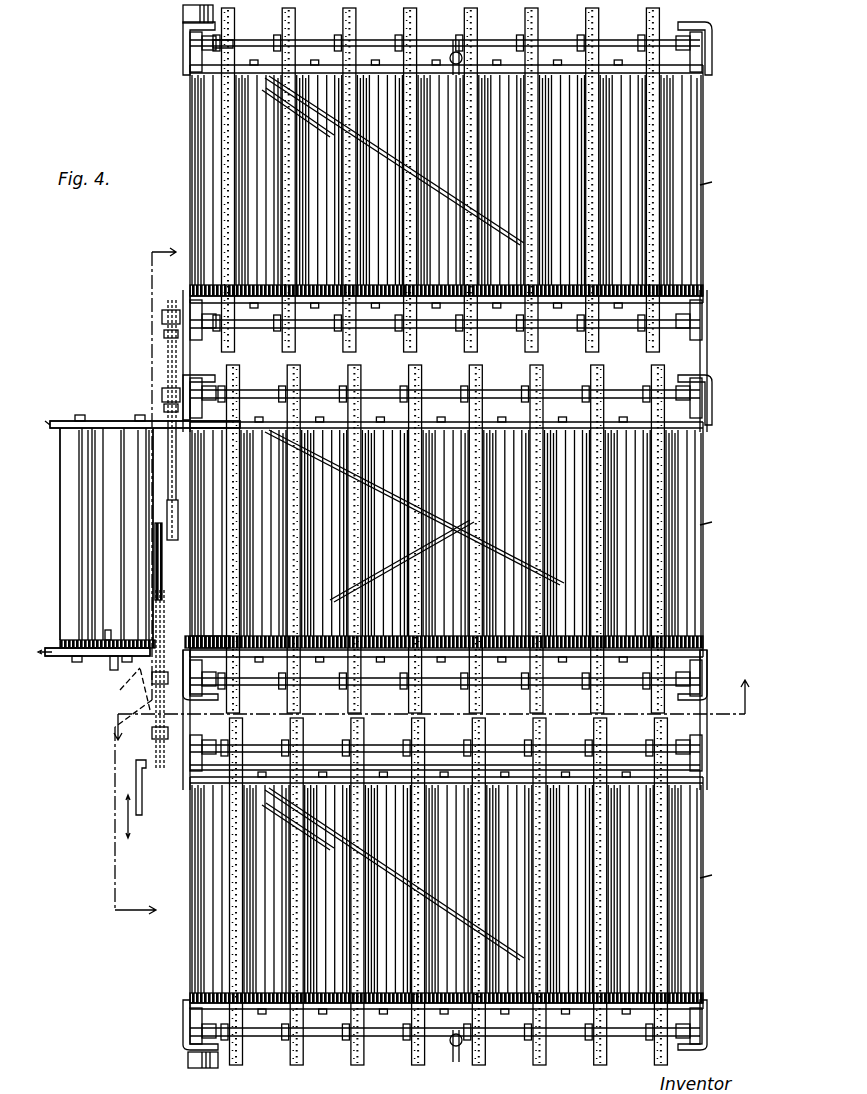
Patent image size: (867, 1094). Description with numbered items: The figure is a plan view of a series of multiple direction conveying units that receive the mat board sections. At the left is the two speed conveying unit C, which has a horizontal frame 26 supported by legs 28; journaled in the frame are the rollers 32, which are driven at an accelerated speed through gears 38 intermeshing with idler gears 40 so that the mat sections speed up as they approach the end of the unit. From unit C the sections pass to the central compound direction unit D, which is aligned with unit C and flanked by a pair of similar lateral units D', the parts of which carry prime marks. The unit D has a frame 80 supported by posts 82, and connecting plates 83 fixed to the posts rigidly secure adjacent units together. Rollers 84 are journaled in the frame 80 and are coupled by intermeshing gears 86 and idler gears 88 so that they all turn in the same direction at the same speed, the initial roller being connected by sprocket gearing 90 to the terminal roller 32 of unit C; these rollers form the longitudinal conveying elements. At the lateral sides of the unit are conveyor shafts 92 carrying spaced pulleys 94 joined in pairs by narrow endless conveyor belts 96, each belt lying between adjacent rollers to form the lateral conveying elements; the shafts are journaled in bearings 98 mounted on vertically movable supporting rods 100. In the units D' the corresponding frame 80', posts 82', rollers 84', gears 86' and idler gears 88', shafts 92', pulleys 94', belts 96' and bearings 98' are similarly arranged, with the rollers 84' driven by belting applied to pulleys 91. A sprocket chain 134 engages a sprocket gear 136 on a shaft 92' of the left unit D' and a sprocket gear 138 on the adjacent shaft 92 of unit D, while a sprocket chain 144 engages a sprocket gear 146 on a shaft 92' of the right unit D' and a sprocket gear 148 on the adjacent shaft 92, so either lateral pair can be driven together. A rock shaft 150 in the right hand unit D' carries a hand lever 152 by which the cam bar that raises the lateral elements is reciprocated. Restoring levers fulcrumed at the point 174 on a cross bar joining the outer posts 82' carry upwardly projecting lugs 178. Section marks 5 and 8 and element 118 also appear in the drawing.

The pulley 91 is at (183, 15).
The post 82' is at (444, 534).
The bearing 98' is at (445, 545).
The lug 178 is at (456, 40).
The fulcrum point 174 is at (450, 58).
The conveyor shaft 92' is at (445, 538).
The pulley 94' is at (433, 527).
The frame 80' is at (469, 537).
The lateral compound direction conveying unit D' is at (720, 530).
The conveyor belt 96' is at (485, 536).
The roller 84' is at (469, 539).
The supporting rod 100 is at (478, 190).
The section line 5- 5 is at (138, 588).
The sprocket gear 136 is at (162, 312).
The intermeshing gear 86' is at (436, 547).
The idler gear 88' is at (436, 547).
The connecting plate 83 is at (185, 378).
The sprocket gear 138 is at (165, 380).
The conveyor shaft 92 is at (445, 539).
The pulley 94 is at (439, 529).
The bearing 98 is at (465, 572).
The post 82 is at (456, 537).
The frame 80 is at (465, 539).
The sprocket gearing 90 is at (165, 437).
The sprocket chain 134 is at (176, 484).
The two speed conveying unit C is at (68, 518).
The roller 32 is at (125, 540).
The central compound direction conveying unit D is at (716, 524).
The conveyor belt 96 is at (484, 539).
The roller 84 is at (466, 539).
The guide rack 118 is at (165, 590).
The gear 38 is at (66, 641).
The idler gear 40 is at (106, 636).
The sprocket chain 144 is at (164, 640).
The intermeshing gear 86 is at (441, 546).
The idler gear 88 is at (441, 546).
The horizontal frame 26 is at (80, 660).
The leg 28 is at (115, 670).
The sprocket gear 148 is at (122, 692).
The section line 8- 8 is at (432, 710).
The rock shaft 150 is at (377, 768).
The sprocket gear 146 is at (140, 812).
The hand lever 152 is at (135, 822).